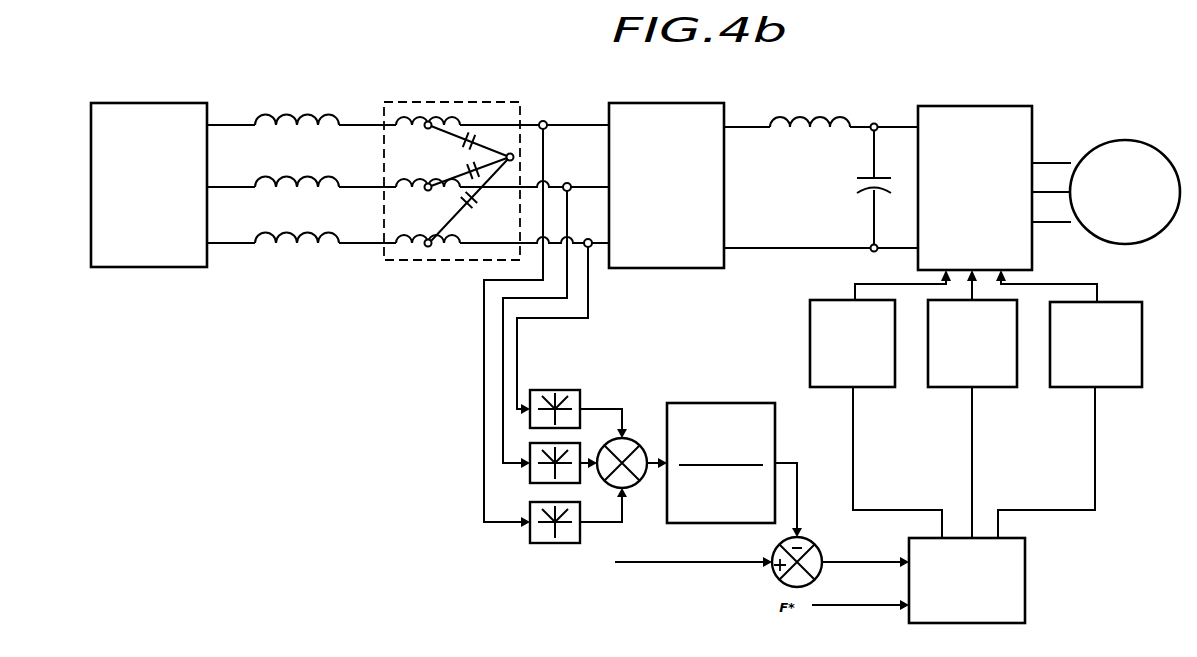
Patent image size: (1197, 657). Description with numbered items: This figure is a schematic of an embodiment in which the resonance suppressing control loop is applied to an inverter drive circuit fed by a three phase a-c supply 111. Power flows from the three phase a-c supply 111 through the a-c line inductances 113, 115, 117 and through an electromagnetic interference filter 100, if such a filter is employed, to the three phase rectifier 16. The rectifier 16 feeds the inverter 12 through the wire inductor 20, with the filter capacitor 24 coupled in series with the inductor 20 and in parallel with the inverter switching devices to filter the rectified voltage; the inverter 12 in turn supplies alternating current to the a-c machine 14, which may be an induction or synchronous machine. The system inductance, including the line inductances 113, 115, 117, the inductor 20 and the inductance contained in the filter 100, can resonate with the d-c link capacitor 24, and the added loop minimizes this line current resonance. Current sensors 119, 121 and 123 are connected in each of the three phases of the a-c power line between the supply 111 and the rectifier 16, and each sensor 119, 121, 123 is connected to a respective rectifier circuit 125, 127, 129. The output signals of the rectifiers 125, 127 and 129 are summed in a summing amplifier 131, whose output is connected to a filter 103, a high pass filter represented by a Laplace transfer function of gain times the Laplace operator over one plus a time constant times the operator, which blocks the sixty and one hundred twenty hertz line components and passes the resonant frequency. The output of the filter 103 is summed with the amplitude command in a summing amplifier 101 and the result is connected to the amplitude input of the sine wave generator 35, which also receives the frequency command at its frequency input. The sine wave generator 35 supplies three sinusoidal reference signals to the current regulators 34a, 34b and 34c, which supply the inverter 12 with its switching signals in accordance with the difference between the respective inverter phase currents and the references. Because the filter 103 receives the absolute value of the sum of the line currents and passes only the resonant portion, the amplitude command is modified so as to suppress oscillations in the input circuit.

The three phase a-c supply 111 is at (166, 103).
The a-c line inductance 113 is at (285, 120).
The a-c line inductance 115 is at (283, 183).
The a-c line inductance 117 is at (283, 241).
The electromagnetic interference filter 100 is at (481, 102).
The current sensor 119 is at (546, 122).
The current sensor 121 is at (568, 184).
The current sensor 123 is at (588, 240).
The rectifier 16 is at (666, 185).
The inductor 20 is at (810, 120).
The filter capacitor 24 is at (866, 180).
The inverter 12 is at (975, 188).
The a-c machine 14 is at (1125, 192).
The rectifier circuit 125 is at (580, 397).
The rectifier circuit 127 is at (580, 450).
The rectifier circuit 129 is at (580, 524).
The summing amplifier 131 is at (640, 446).
The filter 103 is at (738, 403).
The summing amplifier 101 is at (811, 548).
The current regulator 34a is at (874, 389).
The current regulator 34b is at (997, 389).
The current regulator 34c is at (1129, 389).
The sine wave generator 35 is at (967, 580).